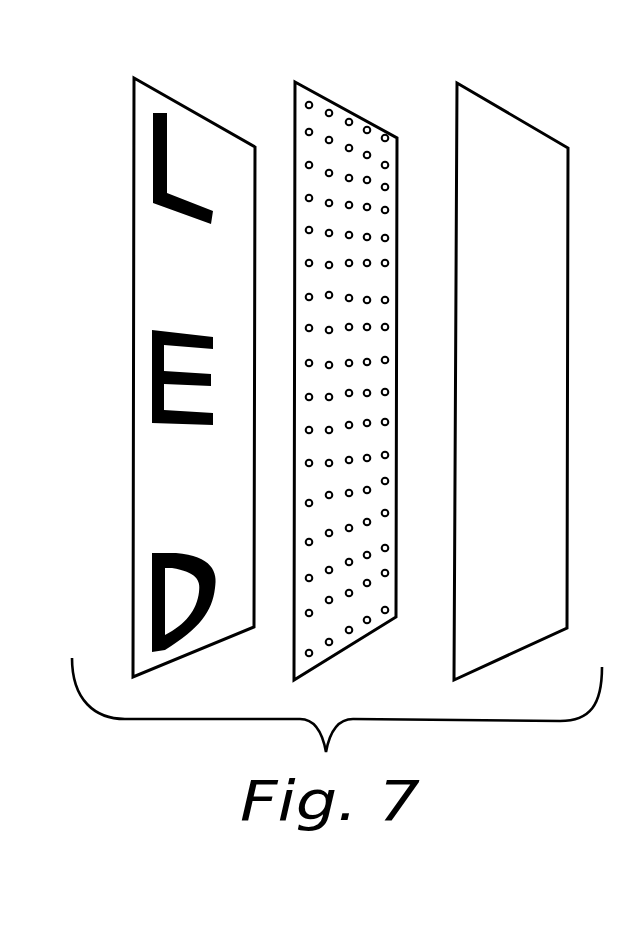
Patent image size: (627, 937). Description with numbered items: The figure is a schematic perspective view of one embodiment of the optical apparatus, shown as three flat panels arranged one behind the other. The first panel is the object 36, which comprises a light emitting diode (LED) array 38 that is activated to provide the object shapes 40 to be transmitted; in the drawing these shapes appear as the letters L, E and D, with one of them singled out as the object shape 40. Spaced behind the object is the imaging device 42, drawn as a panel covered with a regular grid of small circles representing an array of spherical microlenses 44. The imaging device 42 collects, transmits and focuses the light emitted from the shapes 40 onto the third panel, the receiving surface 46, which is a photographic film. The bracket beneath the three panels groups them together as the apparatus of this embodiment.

The object 36 is at (182, 655).
The light emitting diode (LED) array 38 is at (149, 364).
The object shapes 40 is at (165, 147).
The imaging device 42 is at (342, 648).
The spherical microlenses 44 is at (370, 125).
The receiving surface 46 is at (498, 660).